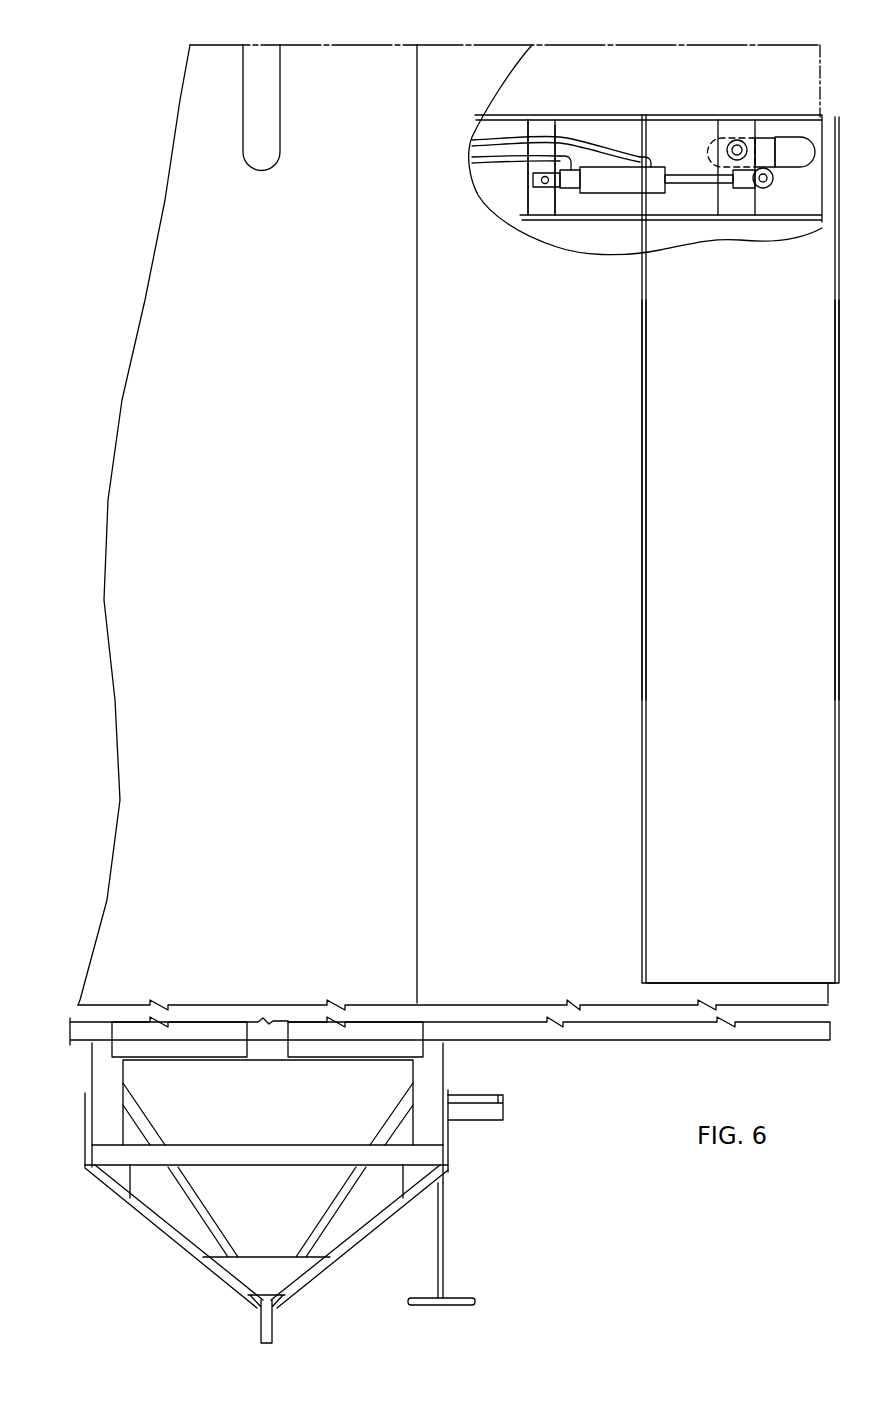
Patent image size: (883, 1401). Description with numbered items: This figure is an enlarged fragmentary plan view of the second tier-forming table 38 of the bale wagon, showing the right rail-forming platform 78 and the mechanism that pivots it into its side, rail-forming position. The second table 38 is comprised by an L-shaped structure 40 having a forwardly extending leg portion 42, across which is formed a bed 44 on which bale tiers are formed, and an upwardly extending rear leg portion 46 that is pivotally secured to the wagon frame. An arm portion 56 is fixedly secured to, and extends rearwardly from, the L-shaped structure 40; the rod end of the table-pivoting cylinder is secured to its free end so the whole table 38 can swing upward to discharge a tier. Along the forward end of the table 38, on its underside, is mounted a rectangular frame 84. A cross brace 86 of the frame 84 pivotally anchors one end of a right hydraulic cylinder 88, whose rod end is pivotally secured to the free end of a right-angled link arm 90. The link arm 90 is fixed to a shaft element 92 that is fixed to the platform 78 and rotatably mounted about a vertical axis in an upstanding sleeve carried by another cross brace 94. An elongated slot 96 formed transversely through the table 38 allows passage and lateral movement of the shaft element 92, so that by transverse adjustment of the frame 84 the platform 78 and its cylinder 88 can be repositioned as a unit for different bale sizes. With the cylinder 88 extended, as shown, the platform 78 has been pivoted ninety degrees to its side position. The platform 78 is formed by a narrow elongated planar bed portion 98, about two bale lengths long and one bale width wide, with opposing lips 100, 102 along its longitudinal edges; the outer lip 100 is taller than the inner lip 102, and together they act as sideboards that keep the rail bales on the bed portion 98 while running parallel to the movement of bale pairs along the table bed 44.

The second tier-forming table 38 is at (365, 40).
The L-shaped structure 40 is at (66, 1147).
The forwardly extending leg portion 42 is at (92, 1065).
The bed 44 is at (493, 550).
The upwardly extending rear leg portion 46 is at (85, 1168).
The arm portion 56 is at (277, 1320).
The right rail-forming platform 78 is at (634, 590).
The rectangular frame 84 is at (593, 122).
The cross brace 86 is at (548, 205).
The right hydraulic cylinder 88 is at (599, 180).
The right-angled link arm 90 is at (778, 157).
The shaft element 92 is at (715, 152).
The cross brace 94 is at (719, 200).
The elongated slot 96 is at (800, 143).
The bed portion 98 is at (740, 751).
The outer lip 100 is at (835, 433).
The inner lip 102 is at (667, 436).